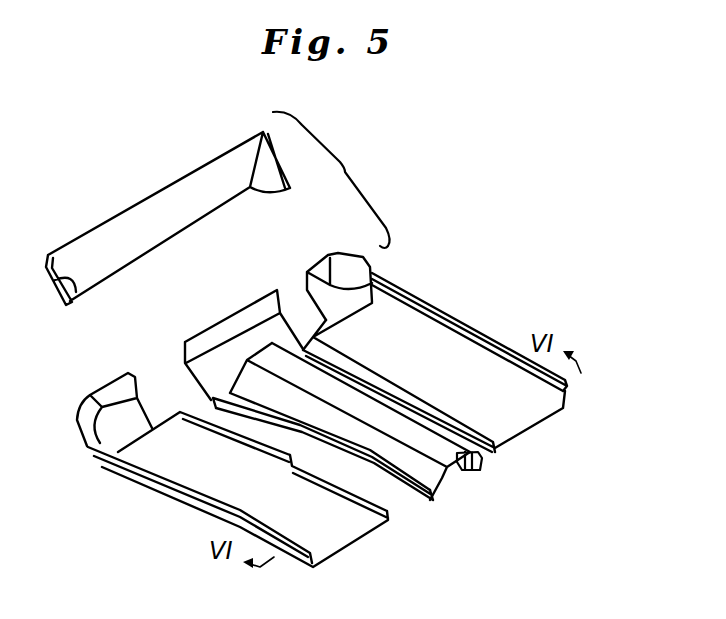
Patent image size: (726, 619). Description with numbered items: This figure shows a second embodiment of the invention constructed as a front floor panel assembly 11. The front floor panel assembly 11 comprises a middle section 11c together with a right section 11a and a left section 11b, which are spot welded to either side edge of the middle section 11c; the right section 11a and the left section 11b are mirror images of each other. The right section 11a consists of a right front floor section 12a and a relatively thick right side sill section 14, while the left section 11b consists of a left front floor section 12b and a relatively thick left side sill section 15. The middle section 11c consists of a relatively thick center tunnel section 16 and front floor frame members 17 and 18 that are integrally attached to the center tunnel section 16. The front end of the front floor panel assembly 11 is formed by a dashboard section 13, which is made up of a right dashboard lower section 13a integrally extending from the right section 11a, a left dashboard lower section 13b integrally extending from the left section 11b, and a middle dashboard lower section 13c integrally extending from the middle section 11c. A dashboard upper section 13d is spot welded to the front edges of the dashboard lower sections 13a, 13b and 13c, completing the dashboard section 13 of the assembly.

The front floor panel assembly 11 is at (480, 270).
The right section 11a is at (543, 423).
The left section 11b is at (372, 537).
The middle section 11c is at (462, 477).
The right front floor section 12a is at (487, 380).
The left front floor section 12b is at (223, 495).
The dashboard section 13 is at (331, 180).
The right dashboard lower section 13a is at (328, 287).
The left dashboard lower section 13b is at (111, 405).
The middle dashboard lower section 13c is at (227, 330).
The dashboard upper section 13d is at (147, 207).
The right side sill section 14 is at (407, 297).
The left side sill section 15 is at (160, 493).
The center tunnel section 16 is at (383, 420).
The front floor frame member 17 is at (480, 465).
The front floor frame member 18 is at (433, 488).